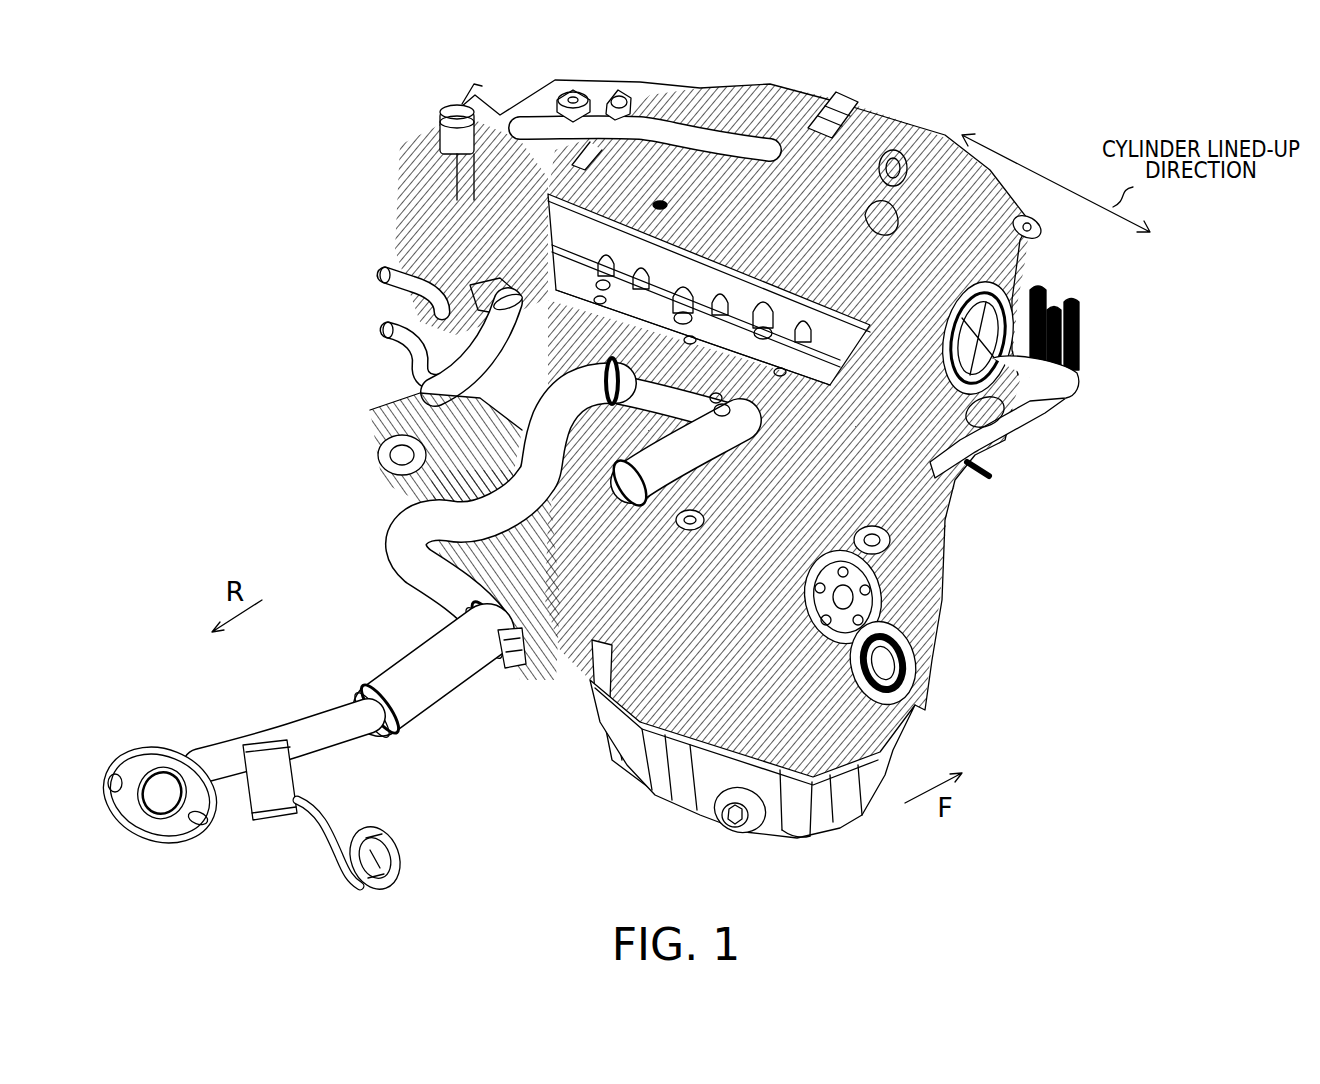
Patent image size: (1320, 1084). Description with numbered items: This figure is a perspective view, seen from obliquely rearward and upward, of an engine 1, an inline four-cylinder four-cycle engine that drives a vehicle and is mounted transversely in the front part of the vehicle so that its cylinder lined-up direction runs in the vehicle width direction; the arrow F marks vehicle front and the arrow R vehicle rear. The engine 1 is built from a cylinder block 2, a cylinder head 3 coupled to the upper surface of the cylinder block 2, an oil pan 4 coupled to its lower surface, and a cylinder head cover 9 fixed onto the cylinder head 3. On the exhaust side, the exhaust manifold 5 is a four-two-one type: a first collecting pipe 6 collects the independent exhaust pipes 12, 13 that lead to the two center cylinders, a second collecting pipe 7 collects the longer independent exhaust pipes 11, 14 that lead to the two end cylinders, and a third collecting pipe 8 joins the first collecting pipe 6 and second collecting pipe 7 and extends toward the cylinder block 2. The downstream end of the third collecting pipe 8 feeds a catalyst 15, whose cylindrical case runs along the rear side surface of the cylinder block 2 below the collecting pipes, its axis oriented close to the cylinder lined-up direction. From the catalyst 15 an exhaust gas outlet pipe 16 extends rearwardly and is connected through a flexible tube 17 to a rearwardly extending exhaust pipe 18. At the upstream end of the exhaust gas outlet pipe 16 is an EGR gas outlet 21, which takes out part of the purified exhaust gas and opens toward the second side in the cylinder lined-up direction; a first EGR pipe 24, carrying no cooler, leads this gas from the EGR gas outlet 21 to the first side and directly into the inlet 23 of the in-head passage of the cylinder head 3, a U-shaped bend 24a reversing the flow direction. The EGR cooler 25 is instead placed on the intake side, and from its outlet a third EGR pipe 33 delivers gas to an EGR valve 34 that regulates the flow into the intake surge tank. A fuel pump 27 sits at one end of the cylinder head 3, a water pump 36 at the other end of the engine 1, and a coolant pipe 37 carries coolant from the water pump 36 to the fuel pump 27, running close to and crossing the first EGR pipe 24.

The engine 1 is at (1053, 113).
The cylinder block 2 is at (673, 773).
The cylinder head 3 is at (472, 297).
The oil pan 4 is at (717, 773).
The exhaust manifold 5 is at (408, 578).
The first collecting pipe 6 is at (393, 517).
The second collecting pipe 7 is at (455, 585).
The third collecting pipe 8 is at (368, 440).
The cylinder head cover 9 is at (610, 177).
The independent exhaust pipe 11 is at (480, 326).
The independent exhaust pipe 12 is at (672, 385).
The independent exhaust pipe 13 is at (724, 404).
The independent exhaust pipe 14 is at (718, 393).
The catalyst 15 is at (408, 404).
The exhaust gas outlet pipe 16 is at (513, 638).
The flexible tube 17 is at (462, 678).
The exhaust pipe 18 is at (228, 762).
The EGR gas outlet 21 is at (600, 660).
The inlet 23 is at (487, 286).
The first EGR pipe 24 is at (458, 358).
The U-shaped bend 24a is at (704, 518).
The EGR cooler 25 is at (833, 122).
The fuel pump 27 is at (432, 170).
The third EGR pipe 33 is at (898, 152).
The EGR valve 34 is at (887, 213).
The water pump 36 is at (828, 529).
The coolant pipe 37 is at (643, 737).